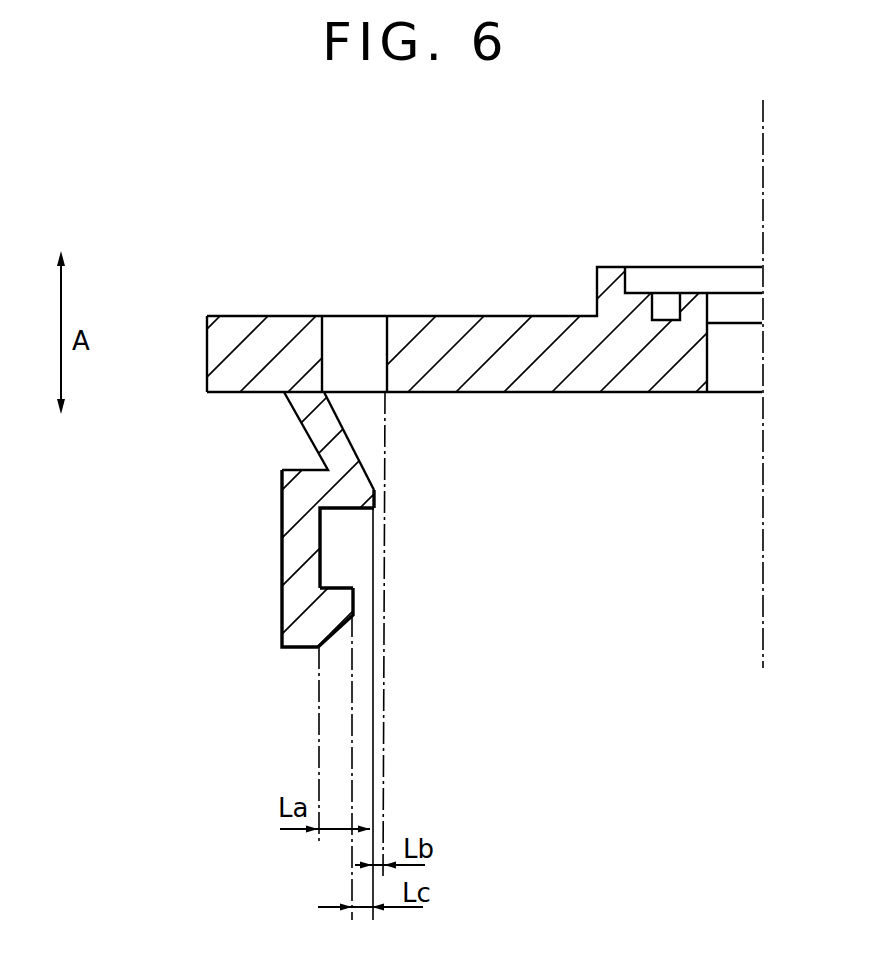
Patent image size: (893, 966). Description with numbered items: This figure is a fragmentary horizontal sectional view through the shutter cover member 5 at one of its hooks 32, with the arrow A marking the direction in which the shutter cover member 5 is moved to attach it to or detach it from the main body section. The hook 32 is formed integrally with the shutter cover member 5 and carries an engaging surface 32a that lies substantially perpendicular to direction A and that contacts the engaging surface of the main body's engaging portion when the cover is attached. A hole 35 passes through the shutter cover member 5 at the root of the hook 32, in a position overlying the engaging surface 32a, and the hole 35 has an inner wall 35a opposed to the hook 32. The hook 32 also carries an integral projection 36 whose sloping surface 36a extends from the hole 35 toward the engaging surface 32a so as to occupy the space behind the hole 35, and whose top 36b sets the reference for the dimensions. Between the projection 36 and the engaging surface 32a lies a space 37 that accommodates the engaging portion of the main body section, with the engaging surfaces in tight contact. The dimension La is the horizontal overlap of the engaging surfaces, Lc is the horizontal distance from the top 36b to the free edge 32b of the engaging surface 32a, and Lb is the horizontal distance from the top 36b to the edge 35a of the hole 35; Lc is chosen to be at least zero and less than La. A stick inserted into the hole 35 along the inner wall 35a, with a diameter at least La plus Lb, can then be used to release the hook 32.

The shutter cover member 5 is at (497, 328).
The hole 35 is at (336, 331).
The inner wall of the hole 35a is at (386, 338).
The projection 36 is at (308, 430).
The sloping surface 36a is at (347, 432).
The top of the projection 36b is at (377, 494).
The space 37 is at (323, 538).
The hook 32 is at (275, 601).
The engaging surface 32a is at (333, 587).
The free edge of the engaging surface 32b is at (357, 591).